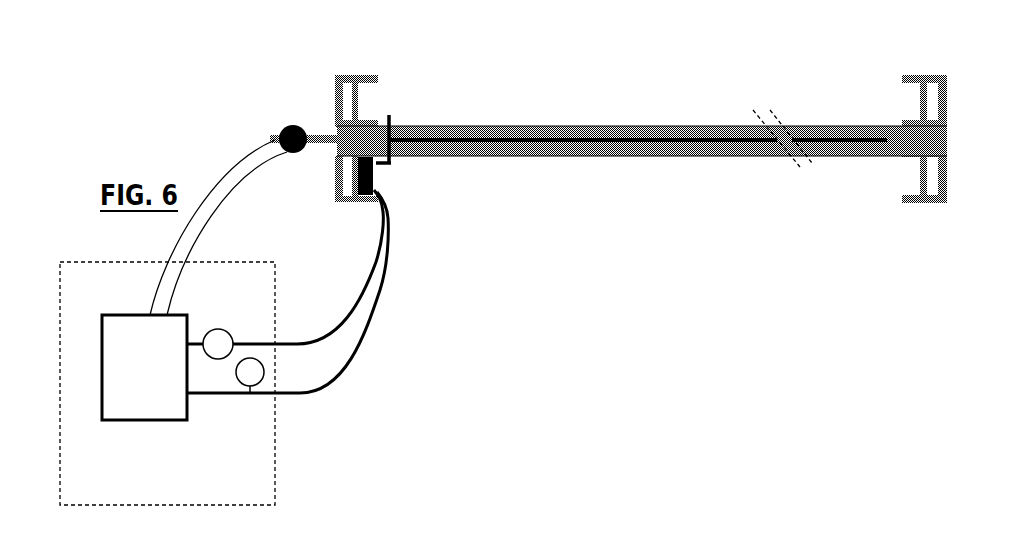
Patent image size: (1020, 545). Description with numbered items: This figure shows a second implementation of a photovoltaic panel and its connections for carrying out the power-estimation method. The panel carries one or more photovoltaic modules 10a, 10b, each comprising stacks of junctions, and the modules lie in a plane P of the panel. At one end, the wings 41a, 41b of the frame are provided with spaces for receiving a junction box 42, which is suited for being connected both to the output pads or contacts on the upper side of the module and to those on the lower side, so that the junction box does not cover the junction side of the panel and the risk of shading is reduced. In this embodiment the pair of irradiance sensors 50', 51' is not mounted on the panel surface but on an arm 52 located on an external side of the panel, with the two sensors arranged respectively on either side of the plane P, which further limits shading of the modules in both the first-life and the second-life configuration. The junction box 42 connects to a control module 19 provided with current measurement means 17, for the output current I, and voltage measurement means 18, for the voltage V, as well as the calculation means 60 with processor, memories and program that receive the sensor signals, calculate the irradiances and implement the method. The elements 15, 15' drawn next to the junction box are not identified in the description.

The photovoltaic module 10a is at (610, 127).
The photovoltaic module 10b is at (735, 137).
The conductive layer 15 is at (427, 93).
The conductive layer end 15' is at (435, 194).
The current measurement means 17 is at (218, 329).
The voltage measurement means 18 is at (258, 397).
The control module 19 is at (139, 420).
The wing of the frame 41a is at (327, 188).
The wing of the frame 41b is at (351, 66).
The junction box 42 is at (375, 187).
The irradiance sensor 50' is at (221, 184).
The irradiance sensor 51' is at (230, 233).
The arm 52 is at (322, 126).
The calculation means 60 is at (275, 462).
The plane of the panel P is at (496, 108).